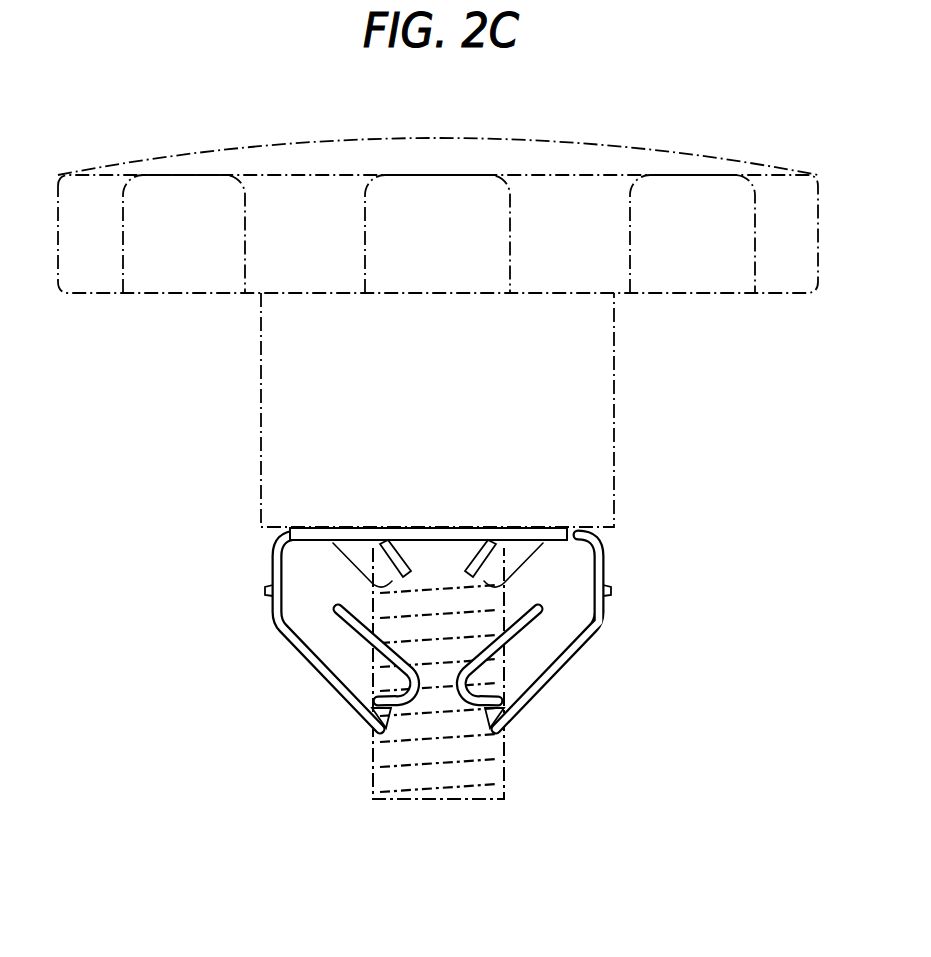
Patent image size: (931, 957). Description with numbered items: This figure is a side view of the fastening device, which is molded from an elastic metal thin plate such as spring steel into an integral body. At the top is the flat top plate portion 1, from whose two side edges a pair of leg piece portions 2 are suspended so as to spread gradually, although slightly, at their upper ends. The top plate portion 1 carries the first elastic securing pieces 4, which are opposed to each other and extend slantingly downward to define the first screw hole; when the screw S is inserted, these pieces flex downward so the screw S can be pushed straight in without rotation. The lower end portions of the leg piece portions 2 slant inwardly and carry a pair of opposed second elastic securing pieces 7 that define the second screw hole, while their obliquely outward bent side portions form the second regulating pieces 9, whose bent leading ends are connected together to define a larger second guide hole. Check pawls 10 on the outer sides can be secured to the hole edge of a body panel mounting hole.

The top plate portion 1 is at (538, 528).
The leg piece portions 2 is at (264, 634).
The first elastic securing pieces 4 is at (398, 545).
The second elastic securing pieces 7 is at (383, 725).
The second regulating pieces 9 is at (342, 610).
The check pawls 10 is at (267, 592).
The screw S is at (436, 781).